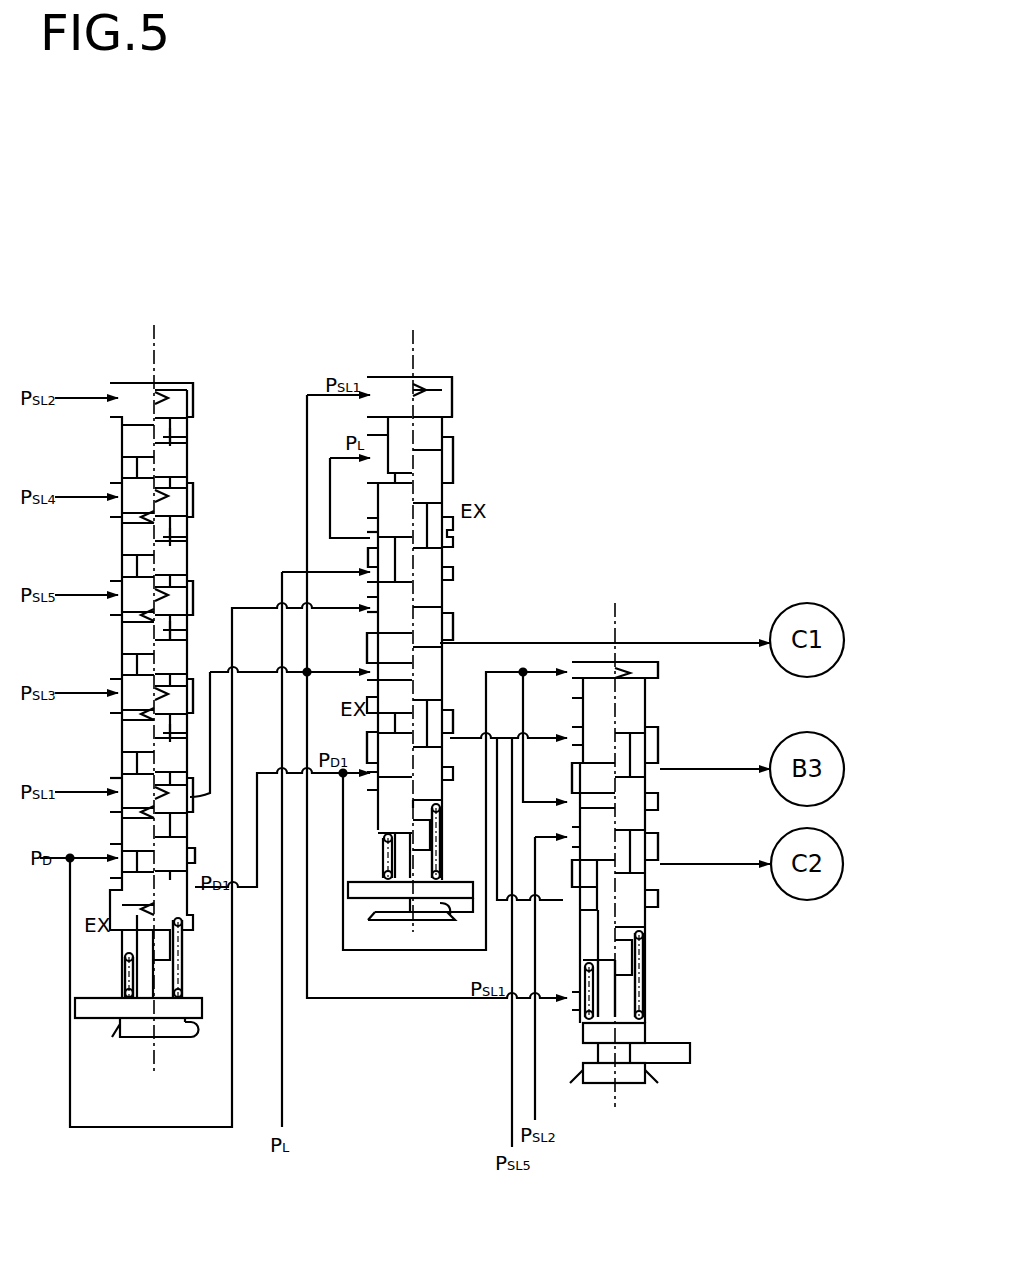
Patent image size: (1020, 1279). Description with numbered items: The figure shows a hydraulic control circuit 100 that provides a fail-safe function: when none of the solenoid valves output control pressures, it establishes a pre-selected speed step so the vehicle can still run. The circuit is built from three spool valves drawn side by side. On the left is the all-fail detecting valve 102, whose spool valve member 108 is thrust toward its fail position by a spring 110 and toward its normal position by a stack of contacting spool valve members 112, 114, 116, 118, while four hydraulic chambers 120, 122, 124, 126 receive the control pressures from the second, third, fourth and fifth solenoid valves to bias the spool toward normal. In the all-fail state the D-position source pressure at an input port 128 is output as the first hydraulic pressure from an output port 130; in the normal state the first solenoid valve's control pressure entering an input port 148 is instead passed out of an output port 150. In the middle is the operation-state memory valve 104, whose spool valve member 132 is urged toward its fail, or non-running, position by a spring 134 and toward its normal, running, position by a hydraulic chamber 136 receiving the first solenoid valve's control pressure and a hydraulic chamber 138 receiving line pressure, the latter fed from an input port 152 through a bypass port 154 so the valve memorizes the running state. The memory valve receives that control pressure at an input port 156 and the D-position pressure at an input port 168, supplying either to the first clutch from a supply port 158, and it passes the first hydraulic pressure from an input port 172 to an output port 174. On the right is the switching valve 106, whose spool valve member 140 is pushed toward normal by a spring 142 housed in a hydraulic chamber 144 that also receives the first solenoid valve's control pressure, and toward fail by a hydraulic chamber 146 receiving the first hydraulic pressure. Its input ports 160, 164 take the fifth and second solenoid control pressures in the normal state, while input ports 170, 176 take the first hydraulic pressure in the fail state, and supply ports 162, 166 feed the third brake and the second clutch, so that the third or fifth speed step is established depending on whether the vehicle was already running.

The hydraulic control circuit 100 is at (707, 182).
The all-fail detecting valve 102 is at (136, 273).
The operation-state memory valve 104 is at (413, 262).
The switching valve 106 is at (618, 562).
The spool valve member 108 is at (213, 847).
The spring 110 is at (187, 975).
The spool valve member 112 is at (187, 733).
The spool valve member 114 is at (187, 630).
The spool valve member 116 is at (187, 537).
The spool valve member 118 is at (187, 437).
The hydraulic chamber 120 is at (193, 396).
The hydraulic chamber 122 is at (193, 688).
The hydraulic chamber 124 is at (193, 484).
The hydraulic chamber 126 is at (193, 583).
The input port 128 is at (108, 848).
The output port 130 is at (190, 893).
The spool valve member 132 is at (423, 617).
The spring 134 is at (442, 877).
The hydraulic chamber 136 is at (443, 400).
The hydraulic chamber 138 is at (442, 443).
The spool valve member 140 is at (623, 843).
The spring 142 is at (642, 934).
The hydraulic chamber 144 is at (618, 1002).
The hydraulic chamber 146 is at (655, 668).
The input port 148 is at (108, 781).
The output port 150 is at (190, 810).
The input port 152 is at (368, 570).
The bypass port 154 is at (368, 540).
The input port 156 is at (367, 670).
The supply port 158 is at (447, 637).
The input port 160 is at (568, 728).
The supply port 162 is at (660, 765).
The input port 164 is at (568, 832).
The supply port 166 is at (655, 870).
The input port 168 is at (367, 610).
The input port 170 is at (568, 795).
The input port 172 is at (368, 768).
The output port 174 is at (452, 735).
The input port 176 is at (568, 905).